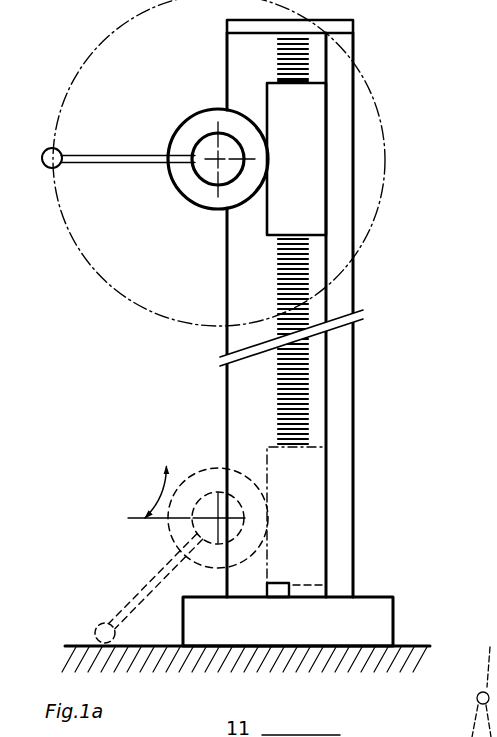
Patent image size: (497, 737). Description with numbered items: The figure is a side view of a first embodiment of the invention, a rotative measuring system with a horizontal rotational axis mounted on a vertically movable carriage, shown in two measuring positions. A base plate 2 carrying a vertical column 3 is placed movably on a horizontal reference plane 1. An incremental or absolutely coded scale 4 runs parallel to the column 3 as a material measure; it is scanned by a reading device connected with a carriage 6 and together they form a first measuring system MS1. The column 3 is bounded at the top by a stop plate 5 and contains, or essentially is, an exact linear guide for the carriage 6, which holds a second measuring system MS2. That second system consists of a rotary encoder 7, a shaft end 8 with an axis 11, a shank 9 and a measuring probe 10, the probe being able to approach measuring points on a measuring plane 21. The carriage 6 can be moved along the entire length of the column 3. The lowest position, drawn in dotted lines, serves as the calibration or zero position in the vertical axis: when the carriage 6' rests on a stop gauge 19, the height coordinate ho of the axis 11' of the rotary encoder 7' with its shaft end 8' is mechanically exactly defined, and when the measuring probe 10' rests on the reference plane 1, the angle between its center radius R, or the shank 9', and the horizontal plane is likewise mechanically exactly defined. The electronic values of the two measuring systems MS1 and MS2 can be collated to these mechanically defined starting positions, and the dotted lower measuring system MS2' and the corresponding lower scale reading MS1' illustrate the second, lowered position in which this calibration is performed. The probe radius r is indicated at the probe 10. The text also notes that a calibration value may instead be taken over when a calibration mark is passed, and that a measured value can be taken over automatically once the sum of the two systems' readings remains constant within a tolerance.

The reference plane 1 is at (72, 645).
The base plate 2 is at (388, 623).
The vertical column 3 is at (343, 520).
The incremental or absolutely coded scale 4 is at (302, 367).
The stop plate 5 is at (353, 28).
The carriage 6 is at (333, 159).
The carriage (lowest position) 6' is at (340, 522).
The rotary encoder 7 is at (204, 159).
The rotary encoder (lowest position) 7' is at (199, 518).
The shaft end 8 is at (209, 136).
The shaft end (lowest position) 8' is at (188, 499).
The shank 9 is at (128, 183).
The shank (lowest position) 9' is at (155, 581).
The measuring probe 10 is at (67, 179).
The measuring probe (lowest position) 10' is at (93, 616).
The axis 11 is at (216, 184).
The axis (lowest position) 11' is at (201, 491).
The stop gauge 19 is at (283, 583).
The measuring plane 21 is at (147, 286).
The center radius R is at (218, 159).
The radius of ball r is at (63, 150).
The first measuring system MS1 is at (346, 64).
The microswitch 1 (lowered position) MS1' is at (362, 423).
The second measuring system MS2 is at (197, 76).
The microswitch 2 (lowered position) MS2' is at (196, 437).
The height coordinate ho is at (144, 516).